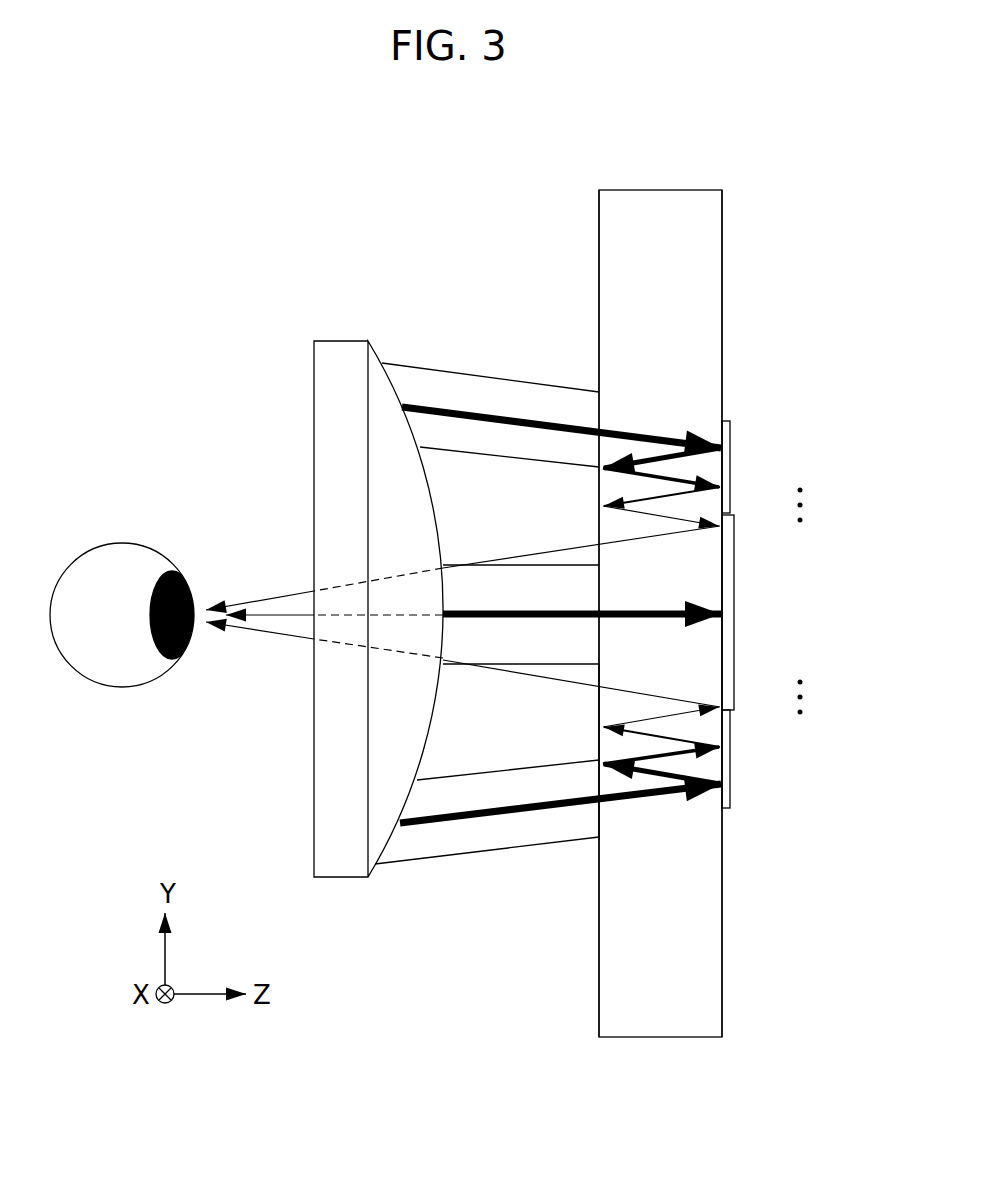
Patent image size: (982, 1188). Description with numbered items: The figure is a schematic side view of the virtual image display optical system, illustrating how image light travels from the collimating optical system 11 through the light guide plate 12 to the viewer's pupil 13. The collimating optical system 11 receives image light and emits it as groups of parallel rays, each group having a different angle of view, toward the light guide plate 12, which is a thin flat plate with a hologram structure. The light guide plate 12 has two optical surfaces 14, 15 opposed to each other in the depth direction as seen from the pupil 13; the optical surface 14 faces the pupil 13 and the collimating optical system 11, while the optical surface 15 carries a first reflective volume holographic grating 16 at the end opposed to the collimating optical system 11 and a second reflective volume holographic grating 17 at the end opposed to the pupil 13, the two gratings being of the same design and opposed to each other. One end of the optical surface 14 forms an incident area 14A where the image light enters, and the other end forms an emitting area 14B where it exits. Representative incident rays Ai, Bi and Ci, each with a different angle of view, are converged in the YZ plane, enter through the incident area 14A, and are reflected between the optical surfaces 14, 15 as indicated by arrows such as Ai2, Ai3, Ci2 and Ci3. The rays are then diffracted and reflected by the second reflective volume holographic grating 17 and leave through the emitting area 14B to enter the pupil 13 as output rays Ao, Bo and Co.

The collimating optical system 11 is at (347, 341).
The light guide plate 12 is at (722, 259).
The pupil 13 is at (120, 688).
The optical surface 14 is at (597, 994).
The incident area 14A is at (590, 844).
The emitting area 14B is at (597, 665).
The optical surface 15 is at (724, 981).
The first reflective volume holographic grating 16 is at (722, 437).
The second reflective volume holographic grating 17 is at (734, 593).
The representative incident ray Ai is at (518, 417).
The reflected ray Ai2 is at (658, 452).
The reflected ray Ai3 is at (687, 480).
The representative incident ray Bi is at (495, 607).
The representative incident ray Ci is at (491, 806).
The reflected ray Ci2 is at (670, 770).
The reflected ray Ci3 is at (678, 737).
The output ray Ao is at (274, 600).
The output ray Bo is at (287, 617).
The output ray Co is at (257, 630).